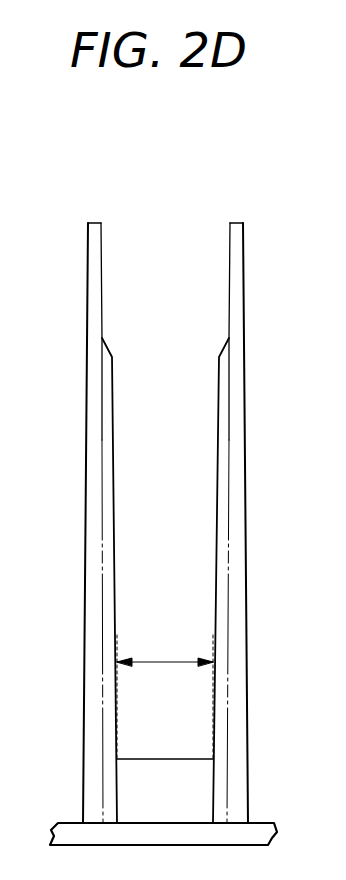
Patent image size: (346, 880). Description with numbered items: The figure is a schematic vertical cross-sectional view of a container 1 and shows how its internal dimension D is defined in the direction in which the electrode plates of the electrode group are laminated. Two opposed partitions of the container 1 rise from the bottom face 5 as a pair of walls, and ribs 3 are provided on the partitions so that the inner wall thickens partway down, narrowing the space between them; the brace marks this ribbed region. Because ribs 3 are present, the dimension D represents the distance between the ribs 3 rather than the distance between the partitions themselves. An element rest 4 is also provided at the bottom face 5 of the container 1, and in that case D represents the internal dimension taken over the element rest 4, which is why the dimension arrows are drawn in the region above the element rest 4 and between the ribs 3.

The container 1 is at (166, 205).
The rib 3 is at (114, 546).
The element rest 4 is at (163, 758).
The bottom face 5 is at (147, 822).
The internal dimension of the container D is at (165, 694).